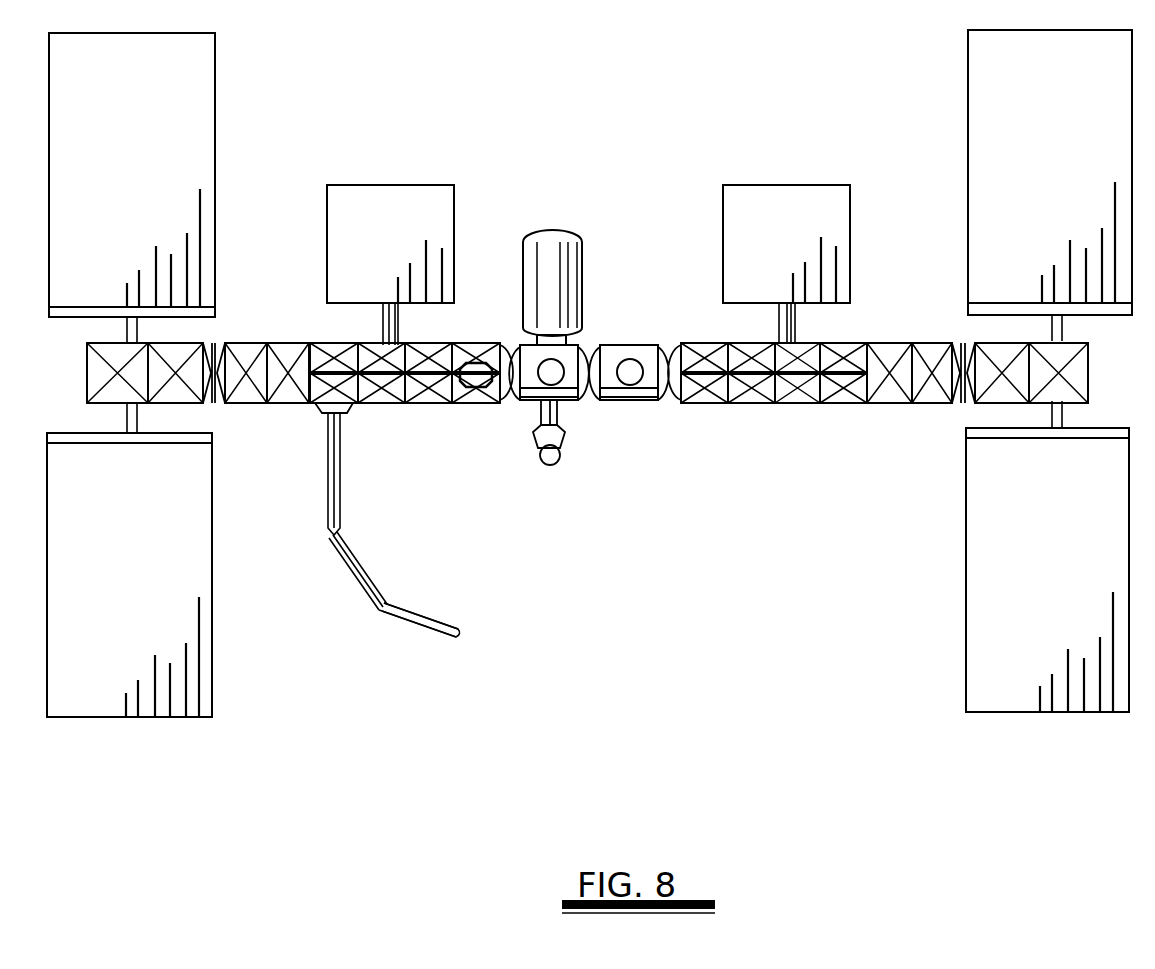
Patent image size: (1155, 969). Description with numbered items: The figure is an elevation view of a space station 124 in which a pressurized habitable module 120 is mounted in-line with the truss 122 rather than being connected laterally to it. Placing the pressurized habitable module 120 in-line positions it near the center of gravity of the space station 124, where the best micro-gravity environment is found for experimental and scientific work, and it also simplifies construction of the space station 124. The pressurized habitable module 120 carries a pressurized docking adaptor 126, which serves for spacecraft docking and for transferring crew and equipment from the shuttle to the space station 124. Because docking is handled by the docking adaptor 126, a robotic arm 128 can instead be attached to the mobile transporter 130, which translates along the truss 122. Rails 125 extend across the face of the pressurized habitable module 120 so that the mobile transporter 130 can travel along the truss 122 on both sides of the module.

The pressurized habitable module 120 is at (578, 282).
The truss 122 is at (455, 345).
The space station 124 is at (757, 502).
The rails 125 is at (668, 403).
The pressurized docking adaptor 126 is at (565, 432).
The robotic arm 128 is at (350, 572).
The mobile transporter 130 is at (349, 413).